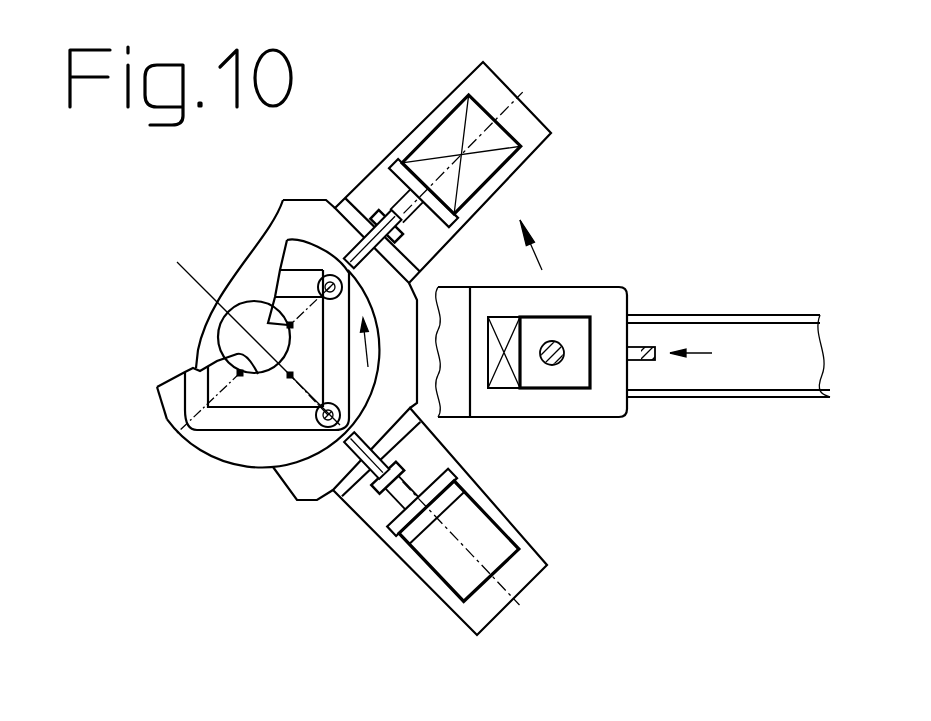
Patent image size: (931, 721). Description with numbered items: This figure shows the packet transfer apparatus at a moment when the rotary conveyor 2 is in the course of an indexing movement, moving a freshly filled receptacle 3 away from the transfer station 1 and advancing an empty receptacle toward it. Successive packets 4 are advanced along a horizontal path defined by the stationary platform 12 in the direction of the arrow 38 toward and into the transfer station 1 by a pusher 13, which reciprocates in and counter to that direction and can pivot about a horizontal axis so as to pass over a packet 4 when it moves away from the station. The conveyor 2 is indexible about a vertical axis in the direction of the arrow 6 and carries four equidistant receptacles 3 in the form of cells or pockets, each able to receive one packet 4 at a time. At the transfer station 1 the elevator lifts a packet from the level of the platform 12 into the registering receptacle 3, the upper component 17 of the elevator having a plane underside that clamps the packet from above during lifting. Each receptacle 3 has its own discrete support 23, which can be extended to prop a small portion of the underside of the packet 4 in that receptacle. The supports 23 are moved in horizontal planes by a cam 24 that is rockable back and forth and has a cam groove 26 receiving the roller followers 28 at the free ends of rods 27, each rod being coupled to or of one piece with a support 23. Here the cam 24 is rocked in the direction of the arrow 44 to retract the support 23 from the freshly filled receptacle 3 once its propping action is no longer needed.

The transfer station 1 is at (633, 297).
The rotary conveyor 2 is at (199, 348).
The receptacle 3 is at (504, 83).
The packet 4 is at (443, 147).
The arrow 6 is at (538, 260).
The stationary platform 12 is at (758, 375).
The pusher 13 is at (643, 360).
The upper component 17 is at (568, 345).
The support 23 is at (385, 485).
The cam 24 is at (165, 412).
The cam groove 26 is at (245, 417).
The rod 27 is at (345, 468).
The roller follower 28 is at (325, 283).
The arrow 38 is at (705, 353).
The arrow 44 is at (420, 403).